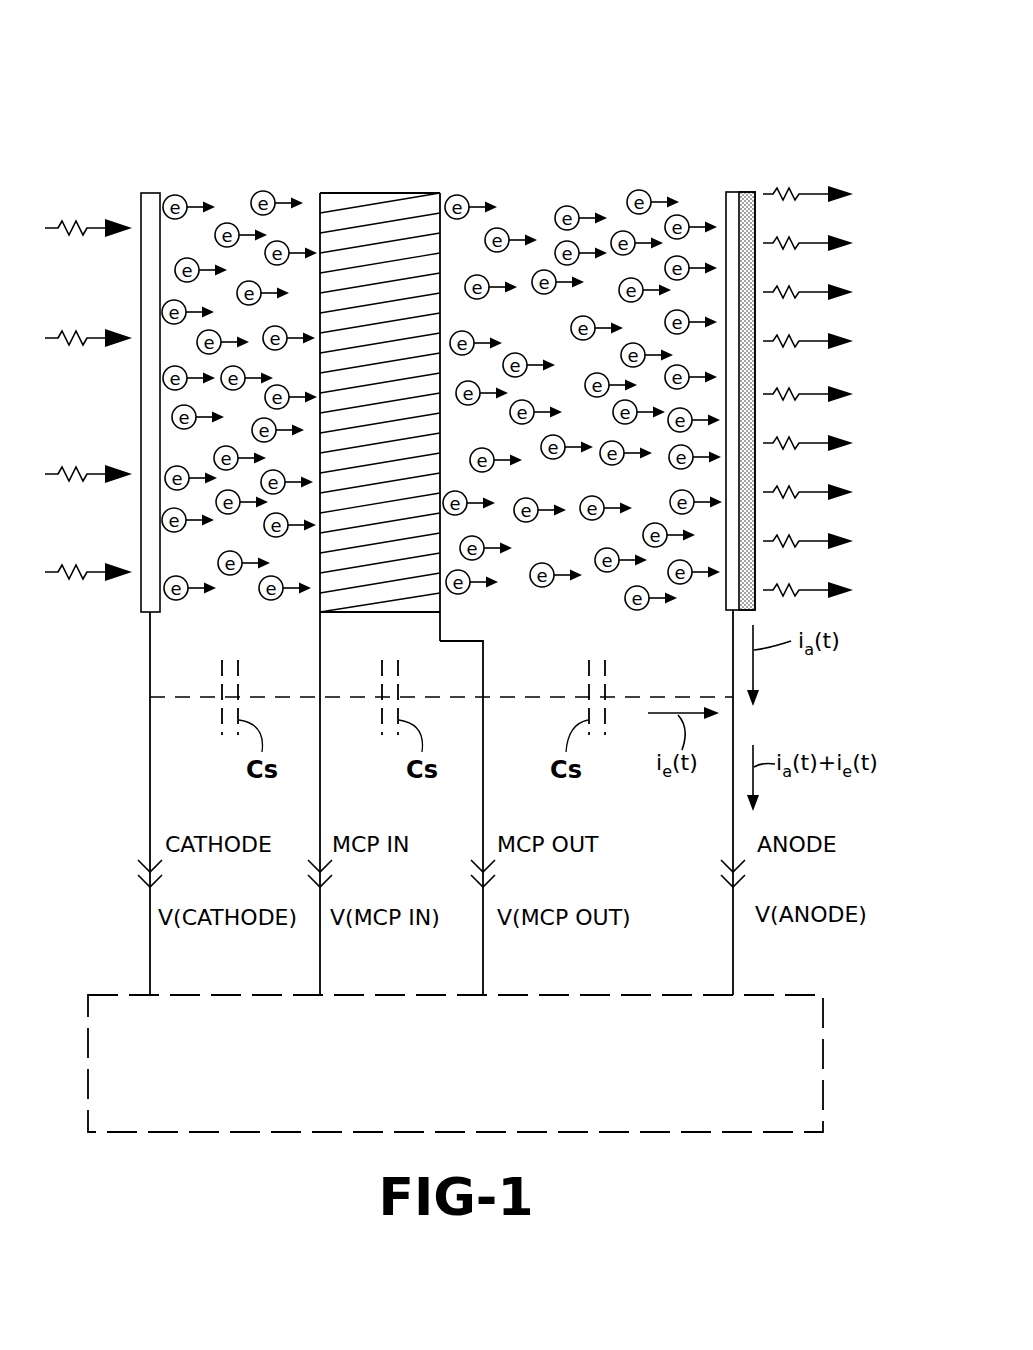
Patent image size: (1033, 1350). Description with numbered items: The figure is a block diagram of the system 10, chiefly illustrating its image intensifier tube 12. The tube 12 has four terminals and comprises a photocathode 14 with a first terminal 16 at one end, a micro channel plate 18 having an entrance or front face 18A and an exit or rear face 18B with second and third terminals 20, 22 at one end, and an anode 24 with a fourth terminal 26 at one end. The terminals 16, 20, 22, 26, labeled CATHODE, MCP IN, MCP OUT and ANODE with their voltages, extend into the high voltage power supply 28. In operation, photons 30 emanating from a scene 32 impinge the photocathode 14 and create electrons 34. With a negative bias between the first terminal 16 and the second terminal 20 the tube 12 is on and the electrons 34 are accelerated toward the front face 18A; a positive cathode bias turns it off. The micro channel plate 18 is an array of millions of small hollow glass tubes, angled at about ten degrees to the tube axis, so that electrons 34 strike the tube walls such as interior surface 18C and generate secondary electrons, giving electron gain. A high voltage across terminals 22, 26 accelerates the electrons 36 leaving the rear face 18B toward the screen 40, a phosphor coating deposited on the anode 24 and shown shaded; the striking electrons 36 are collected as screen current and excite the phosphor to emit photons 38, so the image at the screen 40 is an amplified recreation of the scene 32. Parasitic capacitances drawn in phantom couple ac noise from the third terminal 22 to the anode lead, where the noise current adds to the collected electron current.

The system 10 is at (789, 99).
The image intensifier tube 12 is at (322, 106).
The photocathode 14 is at (150, 193).
The first terminal 16 is at (150, 661).
The micro channel plate 18 is at (320, 199).
The front face 18A is at (317, 201).
The rear face 18B is at (441, 193).
The interior surface 18C is at (363, 223).
The second terminal 20 is at (320, 642).
The third terminal 22 is at (484, 656).
The anode 24 is at (735, 192).
The fourth terminal 26 is at (733, 733).
The high voltage power supply 28 is at (674, 995).
The photons 30 is at (62, 572).
The scene 32 is at (79, 377).
The electrons 34 is at (176, 196).
The electrons 36 is at (628, 197).
The photons 38 is at (801, 194).
The screen 40 is at (746, 398).